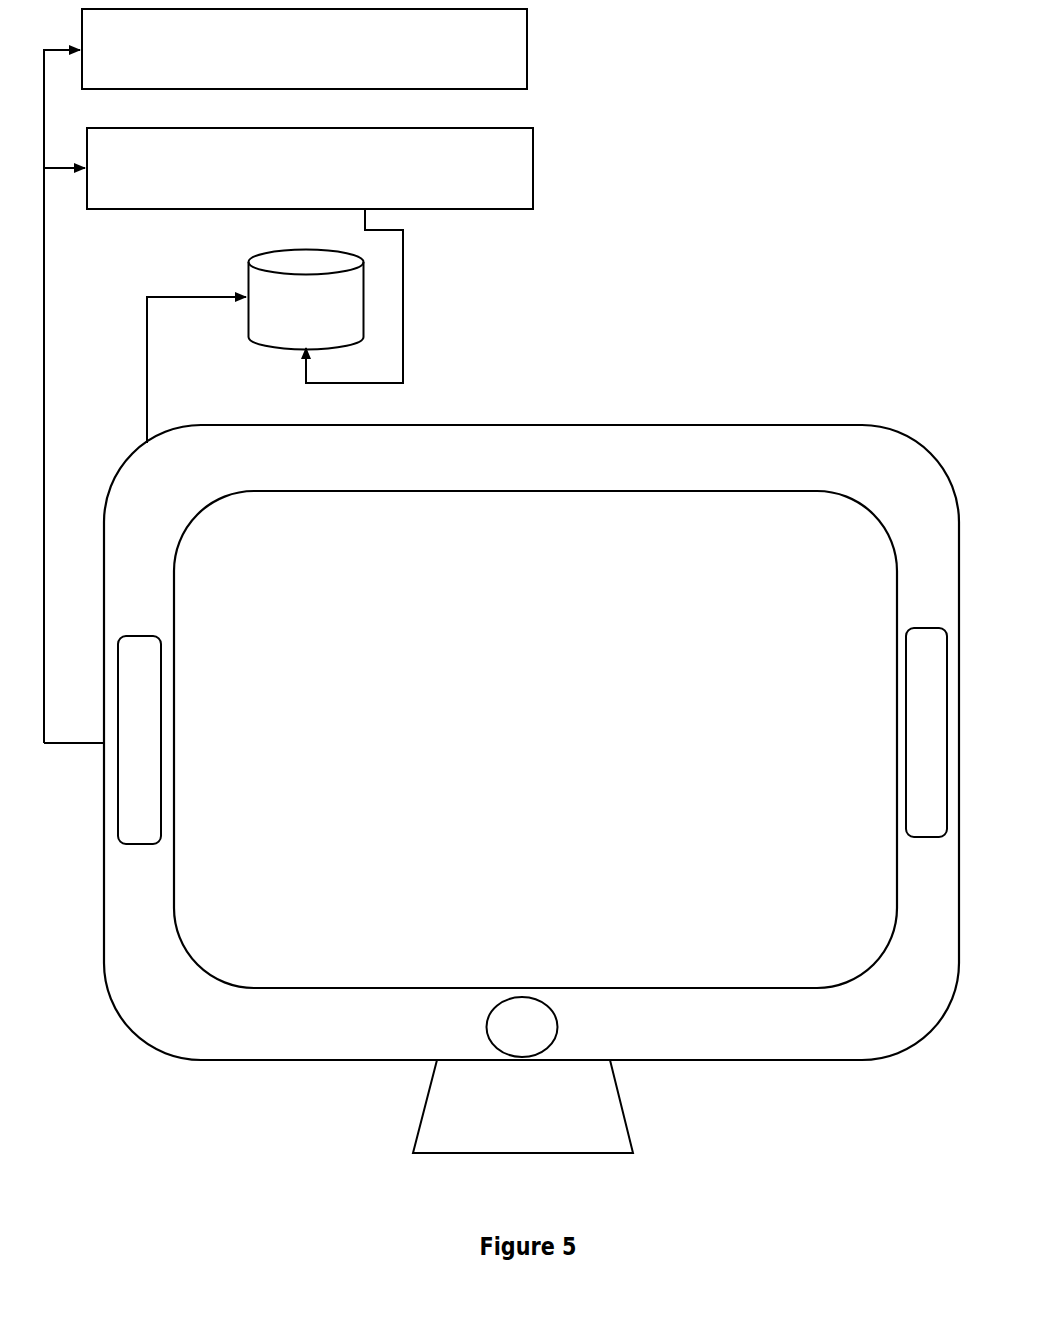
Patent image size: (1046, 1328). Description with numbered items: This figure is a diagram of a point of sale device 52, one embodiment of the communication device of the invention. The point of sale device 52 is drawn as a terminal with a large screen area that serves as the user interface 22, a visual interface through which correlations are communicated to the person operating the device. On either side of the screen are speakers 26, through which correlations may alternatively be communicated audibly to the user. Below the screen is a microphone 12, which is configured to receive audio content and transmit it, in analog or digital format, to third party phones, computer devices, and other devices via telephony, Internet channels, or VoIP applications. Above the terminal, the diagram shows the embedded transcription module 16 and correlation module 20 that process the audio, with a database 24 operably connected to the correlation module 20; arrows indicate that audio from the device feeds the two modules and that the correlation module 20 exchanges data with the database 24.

The transcription module 16 is at (331, 49).
The correlation module 20 is at (333, 168).
The database 24 is at (306, 300).
The point of sale device 52 is at (689, 385).
The user interface 22 is at (535, 739).
The speakers 26 is at (532, 736).
The microphone 12 is at (522, 1027).